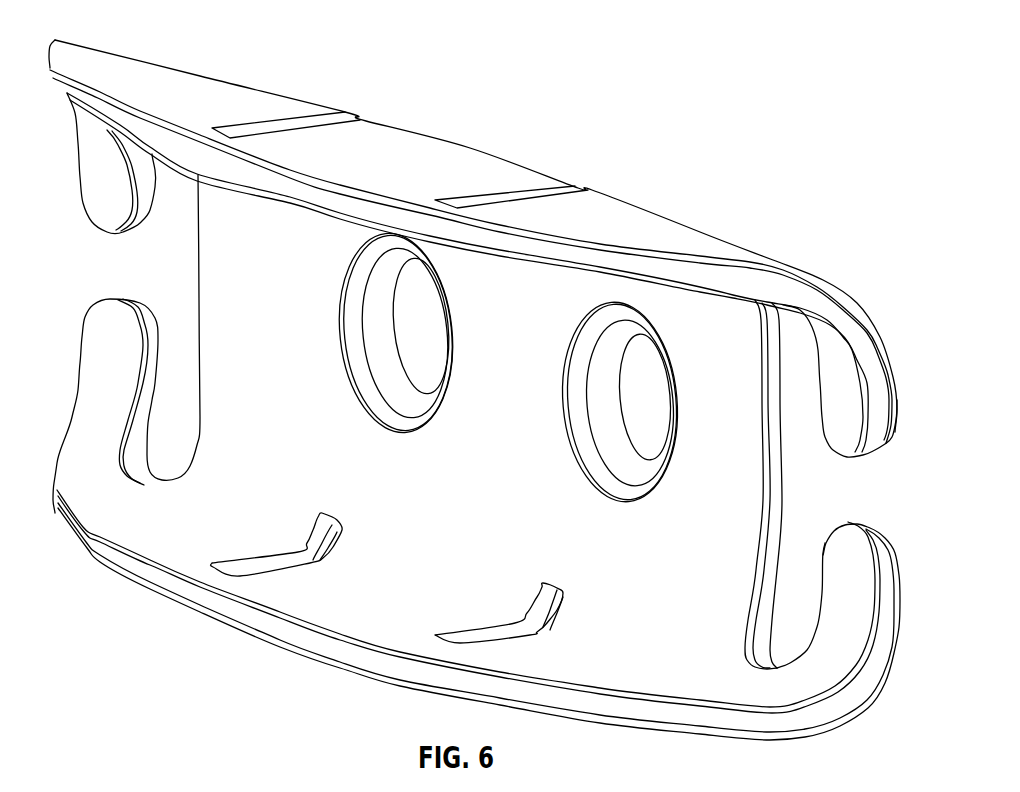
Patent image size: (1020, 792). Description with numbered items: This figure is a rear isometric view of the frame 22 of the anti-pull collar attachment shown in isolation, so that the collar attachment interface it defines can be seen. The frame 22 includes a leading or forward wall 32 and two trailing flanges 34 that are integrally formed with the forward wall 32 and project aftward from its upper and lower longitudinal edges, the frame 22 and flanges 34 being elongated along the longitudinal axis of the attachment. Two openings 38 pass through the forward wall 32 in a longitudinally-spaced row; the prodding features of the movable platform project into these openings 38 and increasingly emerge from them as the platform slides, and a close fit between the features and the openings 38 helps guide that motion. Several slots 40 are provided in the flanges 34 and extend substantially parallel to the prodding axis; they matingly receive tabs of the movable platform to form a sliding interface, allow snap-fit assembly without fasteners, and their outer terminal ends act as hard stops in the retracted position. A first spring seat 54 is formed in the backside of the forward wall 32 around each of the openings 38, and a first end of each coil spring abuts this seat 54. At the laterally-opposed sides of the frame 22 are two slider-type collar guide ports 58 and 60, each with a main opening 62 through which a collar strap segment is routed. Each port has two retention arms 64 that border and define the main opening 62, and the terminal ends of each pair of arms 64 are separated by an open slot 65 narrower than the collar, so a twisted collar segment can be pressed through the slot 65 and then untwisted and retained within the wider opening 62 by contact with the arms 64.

The frame 22 is at (88, 31).
The forward wall 32 is at (217, 303).
The trailing flanges 34 is at (443, 148).
The openings 38 is at (415, 282).
The slots 40 is at (365, 111).
The first spring seat 54 is at (356, 388).
The collar guide port 58 is at (746, 671).
The collar guide port 60 is at (138, 487).
The main opening 62 is at (193, 376).
The retention arms 64 is at (93, 201).
The open slot 65 is at (125, 287).